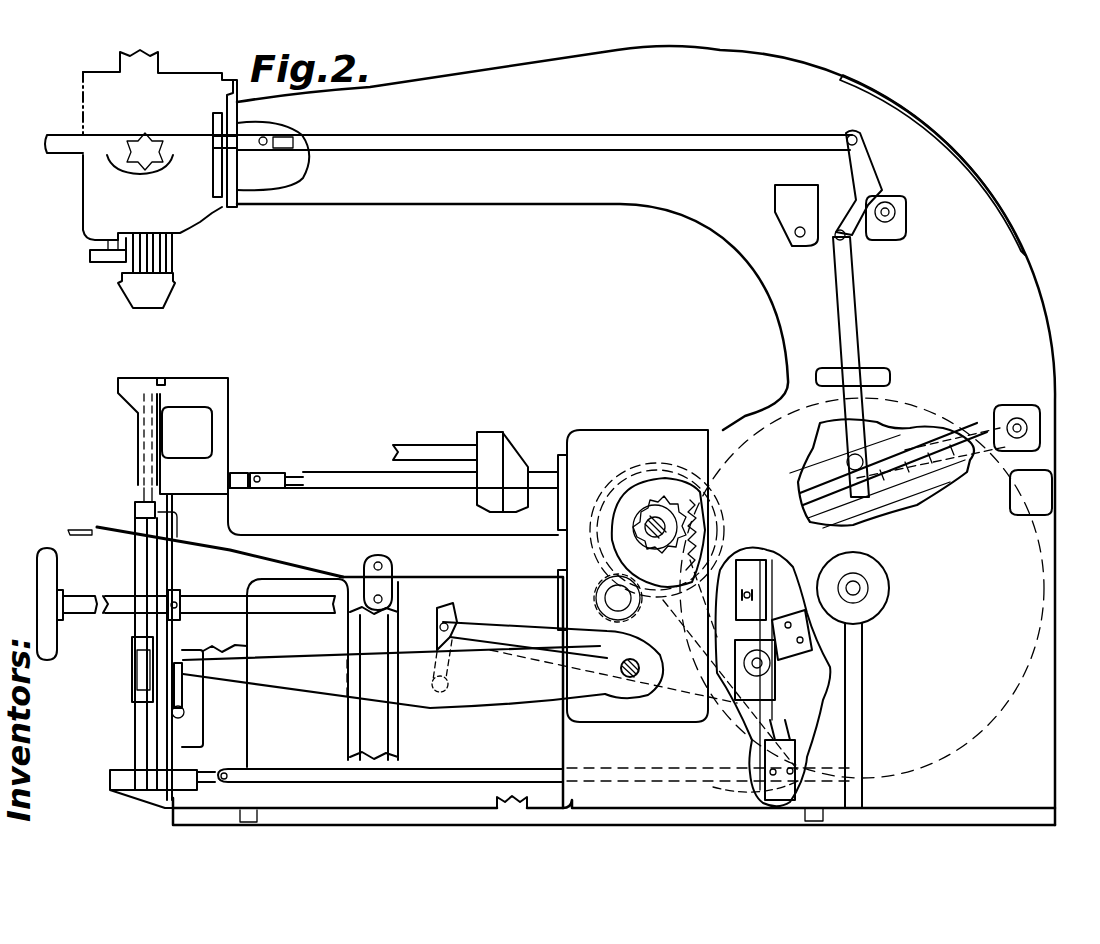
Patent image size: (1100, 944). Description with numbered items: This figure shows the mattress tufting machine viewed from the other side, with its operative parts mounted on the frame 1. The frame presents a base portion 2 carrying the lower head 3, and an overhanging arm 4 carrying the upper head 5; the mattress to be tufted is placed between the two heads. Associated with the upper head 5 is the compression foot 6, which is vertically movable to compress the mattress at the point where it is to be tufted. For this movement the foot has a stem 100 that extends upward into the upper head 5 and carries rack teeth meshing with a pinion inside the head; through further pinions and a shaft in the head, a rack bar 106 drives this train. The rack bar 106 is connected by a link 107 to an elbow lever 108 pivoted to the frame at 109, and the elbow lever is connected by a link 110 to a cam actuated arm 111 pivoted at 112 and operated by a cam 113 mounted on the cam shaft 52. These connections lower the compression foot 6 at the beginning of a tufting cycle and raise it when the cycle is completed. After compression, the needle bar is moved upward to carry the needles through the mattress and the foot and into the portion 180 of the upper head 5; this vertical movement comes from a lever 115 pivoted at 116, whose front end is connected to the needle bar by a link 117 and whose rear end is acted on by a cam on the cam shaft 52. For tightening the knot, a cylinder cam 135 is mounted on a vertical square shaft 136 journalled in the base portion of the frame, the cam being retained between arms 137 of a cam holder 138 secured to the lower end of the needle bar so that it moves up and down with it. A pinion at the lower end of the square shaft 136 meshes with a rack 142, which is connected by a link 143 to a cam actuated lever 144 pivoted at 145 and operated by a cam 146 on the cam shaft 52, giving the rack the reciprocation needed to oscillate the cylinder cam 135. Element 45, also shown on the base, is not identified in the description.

The frame 1 is at (775, 318).
The base 2 is at (232, 533).
The lower head 3 is at (140, 400).
The overhanging arm 4 is at (617, 183).
The upper head 5 is at (93, 220).
The compression foot 6 is at (158, 293).
The feed rod 45 is at (234, 472).
The cam shaft 52 is at (875, 588).
The stem 100 is at (163, 255).
The rack bar 106 is at (213, 132).
The link 107 is at (505, 137).
The elbow lever 108 is at (880, 188).
The pivot 109 is at (900, 213).
The link 110 is at (850, 324).
The cam actuated arm 111 is at (923, 458).
The pivot 112 is at (1017, 428).
The cam 113 is at (822, 457).
The lever 115 is at (456, 687).
The pivot 116 is at (620, 668).
The link 117 is at (183, 680).
The cylinder cam 135 is at (142, 680).
The vertical square shaft 136 is at (155, 740).
The arms 137 is at (132, 646).
The cam holder 138 is at (132, 666).
The rack 142 is at (190, 780).
The link 143 is at (443, 776).
The cam actuated lever 144 is at (758, 742).
The pivot 145 is at (737, 653).
The cam 146 is at (757, 558).
The portion of the upper head 180 is at (109, 258).